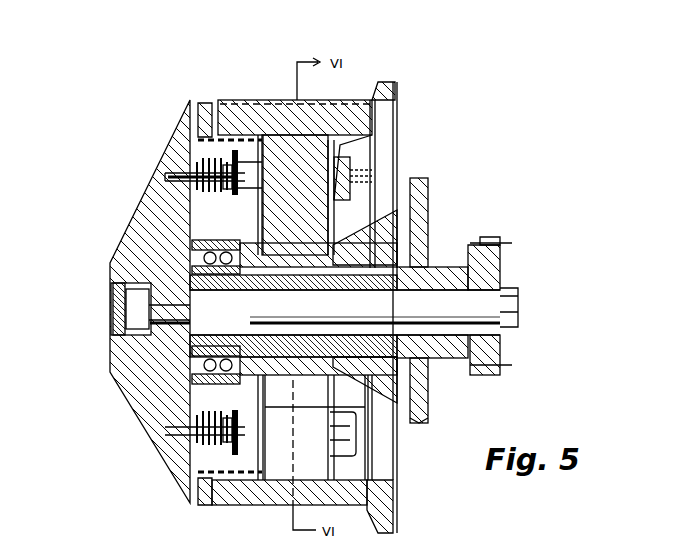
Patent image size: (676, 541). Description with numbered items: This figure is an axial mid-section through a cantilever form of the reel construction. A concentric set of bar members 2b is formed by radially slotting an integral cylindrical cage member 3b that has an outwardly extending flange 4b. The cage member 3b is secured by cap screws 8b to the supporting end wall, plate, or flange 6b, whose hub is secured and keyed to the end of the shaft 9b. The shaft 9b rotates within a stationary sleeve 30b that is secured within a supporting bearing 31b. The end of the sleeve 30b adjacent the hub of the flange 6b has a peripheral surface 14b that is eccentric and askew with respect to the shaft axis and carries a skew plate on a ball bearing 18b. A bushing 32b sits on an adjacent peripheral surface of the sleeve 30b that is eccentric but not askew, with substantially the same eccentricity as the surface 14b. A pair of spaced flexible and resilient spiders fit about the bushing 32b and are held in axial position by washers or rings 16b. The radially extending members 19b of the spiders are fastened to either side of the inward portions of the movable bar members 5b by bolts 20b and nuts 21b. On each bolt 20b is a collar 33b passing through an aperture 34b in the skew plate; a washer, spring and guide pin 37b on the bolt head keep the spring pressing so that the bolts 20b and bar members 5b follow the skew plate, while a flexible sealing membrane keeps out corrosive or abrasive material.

The bar members 2b is at (240, 505).
The cylindrical cage member 3b is at (205, 108).
The outwardly extending flange 4b is at (396, 86).
The movable bar members 5b is at (283, 100).
The supporting end wall, plate, or flange 6b is at (140, 236).
The cap screws 8b is at (205, 505).
The shaft 9b is at (452, 345).
The peripheral surface 14b is at (306, 309).
The washers or rings 16b is at (310, 375).
The ball bearing 18b is at (205, 350).
The radially extending members 19b is at (338, 160).
The bolts 20b is at (352, 183).
The nuts 21b is at (384, 184).
The stationary sleeve 30b is at (355, 330).
The supporting bearing 31b is at (440, 270).
The bushing 32b is at (293, 316).
The collar 33b is at (236, 243).
The aperture 34b is at (243, 150).
The pin 37b is at (170, 175).